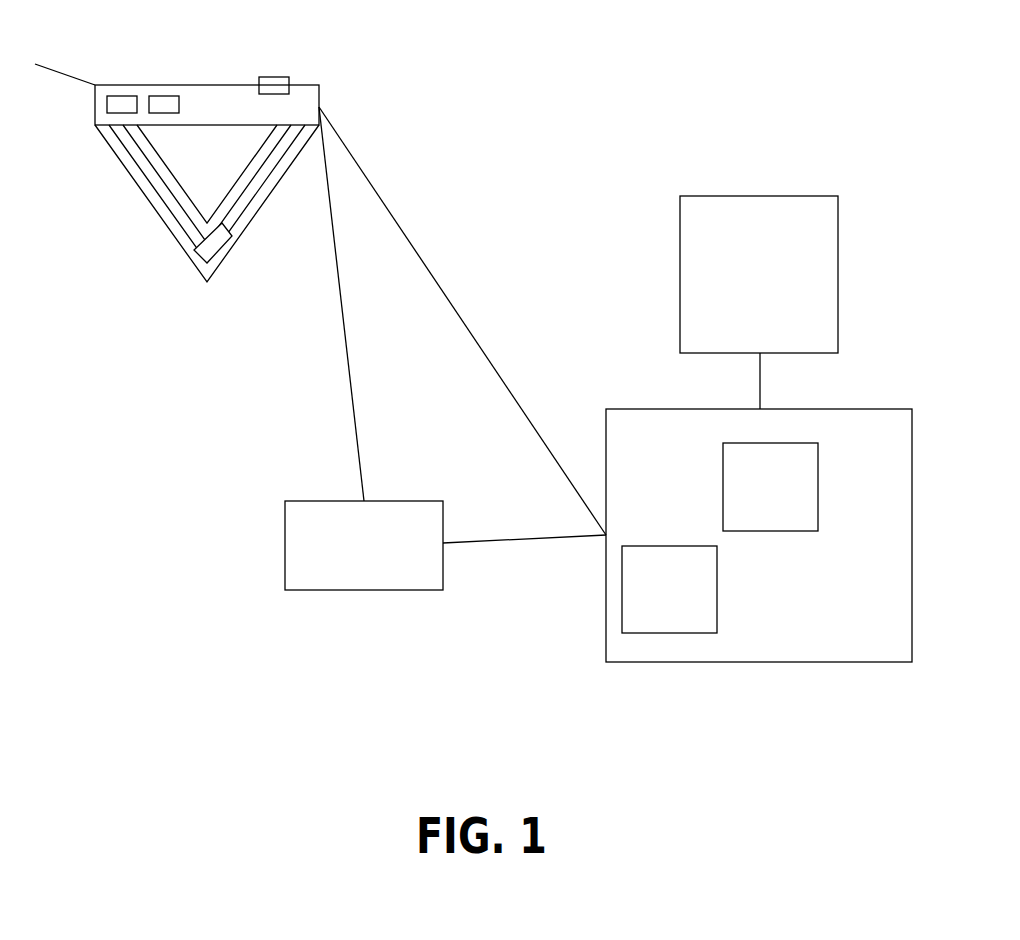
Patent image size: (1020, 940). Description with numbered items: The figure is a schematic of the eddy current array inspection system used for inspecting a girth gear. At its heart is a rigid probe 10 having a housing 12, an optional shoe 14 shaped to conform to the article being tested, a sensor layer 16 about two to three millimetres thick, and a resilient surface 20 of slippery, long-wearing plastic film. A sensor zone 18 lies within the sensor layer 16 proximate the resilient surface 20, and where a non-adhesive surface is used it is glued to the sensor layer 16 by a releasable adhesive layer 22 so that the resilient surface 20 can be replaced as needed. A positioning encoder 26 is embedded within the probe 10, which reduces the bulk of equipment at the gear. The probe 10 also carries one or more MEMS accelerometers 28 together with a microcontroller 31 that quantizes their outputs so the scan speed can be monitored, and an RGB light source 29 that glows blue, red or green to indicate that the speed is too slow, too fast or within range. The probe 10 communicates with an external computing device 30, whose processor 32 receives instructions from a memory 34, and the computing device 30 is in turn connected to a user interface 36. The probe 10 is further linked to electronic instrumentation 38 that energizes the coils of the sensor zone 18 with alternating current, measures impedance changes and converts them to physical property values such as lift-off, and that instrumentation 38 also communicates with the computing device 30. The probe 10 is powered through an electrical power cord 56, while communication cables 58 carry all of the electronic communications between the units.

The rigid probe 10 is at (166, 273).
The housing 12 is at (311, 97).
The shoe 14 is at (160, 138).
The sensor layer 16 is at (270, 142).
The sensor zone 18 is at (262, 168).
The resilient surface 20 is at (270, 187).
The releasable adhesive layer 22 is at (142, 168).
The positioning encoder 26 is at (213, 242).
The MEMS accelerometer 28 is at (163, 103).
The RGB light source 29 is at (275, 85).
The computing device 30 is at (868, 647).
The microcontroller 31 is at (120, 103).
The processor 32 is at (668, 613).
The memory 34 is at (805, 455).
The user interface 36 is at (817, 250).
The electronic instrumentation 38 is at (363, 563).
The electrical power cord 56 is at (46, 64).
The communication cables 58 is at (349, 372).